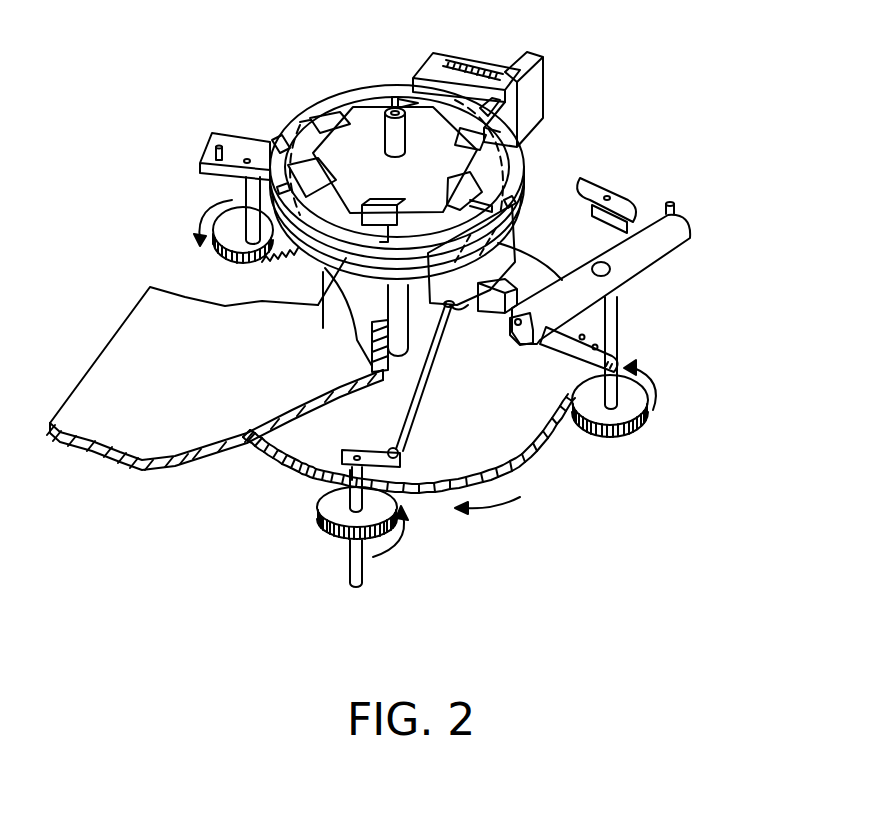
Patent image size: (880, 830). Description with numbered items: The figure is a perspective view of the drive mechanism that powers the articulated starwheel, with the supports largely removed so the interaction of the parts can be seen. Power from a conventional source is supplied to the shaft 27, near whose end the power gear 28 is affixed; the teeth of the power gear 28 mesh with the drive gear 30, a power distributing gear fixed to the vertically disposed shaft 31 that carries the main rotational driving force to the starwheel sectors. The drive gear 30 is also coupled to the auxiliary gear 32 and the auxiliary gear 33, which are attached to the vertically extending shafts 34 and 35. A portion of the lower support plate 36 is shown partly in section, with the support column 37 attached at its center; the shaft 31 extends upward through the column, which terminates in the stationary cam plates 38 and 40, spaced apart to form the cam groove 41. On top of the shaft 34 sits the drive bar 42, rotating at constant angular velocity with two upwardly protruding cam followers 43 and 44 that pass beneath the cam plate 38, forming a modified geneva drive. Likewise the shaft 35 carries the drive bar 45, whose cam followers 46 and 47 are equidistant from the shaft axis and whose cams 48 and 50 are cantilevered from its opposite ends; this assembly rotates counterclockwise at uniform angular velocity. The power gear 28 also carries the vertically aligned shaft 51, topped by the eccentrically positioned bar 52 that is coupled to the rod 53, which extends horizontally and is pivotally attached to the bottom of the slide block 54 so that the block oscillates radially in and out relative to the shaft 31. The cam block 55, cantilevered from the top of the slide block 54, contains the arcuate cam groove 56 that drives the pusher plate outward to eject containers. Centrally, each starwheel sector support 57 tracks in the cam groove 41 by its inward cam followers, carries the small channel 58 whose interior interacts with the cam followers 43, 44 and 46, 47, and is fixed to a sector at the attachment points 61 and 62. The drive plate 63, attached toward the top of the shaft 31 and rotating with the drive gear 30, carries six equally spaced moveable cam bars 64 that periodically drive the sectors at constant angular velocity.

The shaft 27 is at (363, 572).
The power gear 28 is at (392, 532).
The drive gear 30 is at (492, 424).
The shaft 31 is at (387, 344).
The auxiliary gear 32 is at (230, 240).
The auxiliary gear 33 is at (652, 400).
The shaft 34 is at (246, 197).
The shaft 35 is at (618, 318).
The lower support plate 36 is at (205, 391).
The support column 37 is at (348, 292).
The cam plate 38 is at (323, 252).
The cam plate 40 is at (312, 104).
The cam groove 41 is at (312, 246).
The drive bar 42 is at (231, 133).
The cam follower 43 is at (208, 152).
The cam follower 44 is at (272, 137).
The drive bar 45 is at (667, 253).
The cam follower 46 is at (523, 312).
The cam follower 47 is at (674, 217).
The cam 48 is at (596, 181).
The cam 50 is at (603, 365).
The shaft 51 is at (350, 500).
The eccentrically positioned bar 52 is at (341, 452).
The rod 53 is at (407, 398).
The slide block 54 is at (544, 88).
The cam block 55 is at (460, 56).
The cam groove 56 is at (428, 64).
The starwheel sector support 57 is at (500, 238).
The channel 58 is at (490, 309).
The attachment point 61 is at (517, 201).
The attachment point 62 is at (350, 292).
The drive plate 63 is at (455, 166).
The moveable cam bar 64 is at (393, 93).